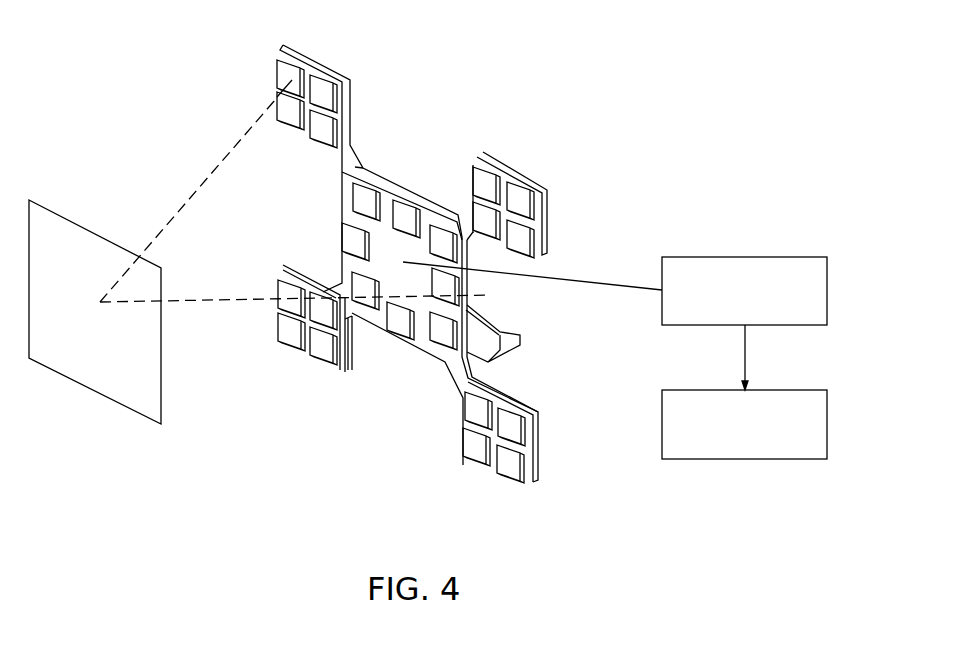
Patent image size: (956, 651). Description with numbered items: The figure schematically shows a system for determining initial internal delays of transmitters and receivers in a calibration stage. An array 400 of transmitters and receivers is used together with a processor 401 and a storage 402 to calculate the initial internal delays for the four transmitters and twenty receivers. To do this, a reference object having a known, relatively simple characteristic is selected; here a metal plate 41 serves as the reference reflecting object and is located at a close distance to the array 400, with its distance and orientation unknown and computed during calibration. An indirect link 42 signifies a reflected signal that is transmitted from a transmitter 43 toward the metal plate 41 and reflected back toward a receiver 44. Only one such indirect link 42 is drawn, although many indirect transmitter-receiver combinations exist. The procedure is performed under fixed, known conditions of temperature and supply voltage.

The metal plate 41 is at (107, 384).
The indirect link 42 is at (137, 189).
The transmitter 43 is at (287, 132).
The receiver 44 is at (465, 296).
The array 400 is at (632, 189).
The processor 401 is at (744, 257).
The storage 402 is at (733, 460).